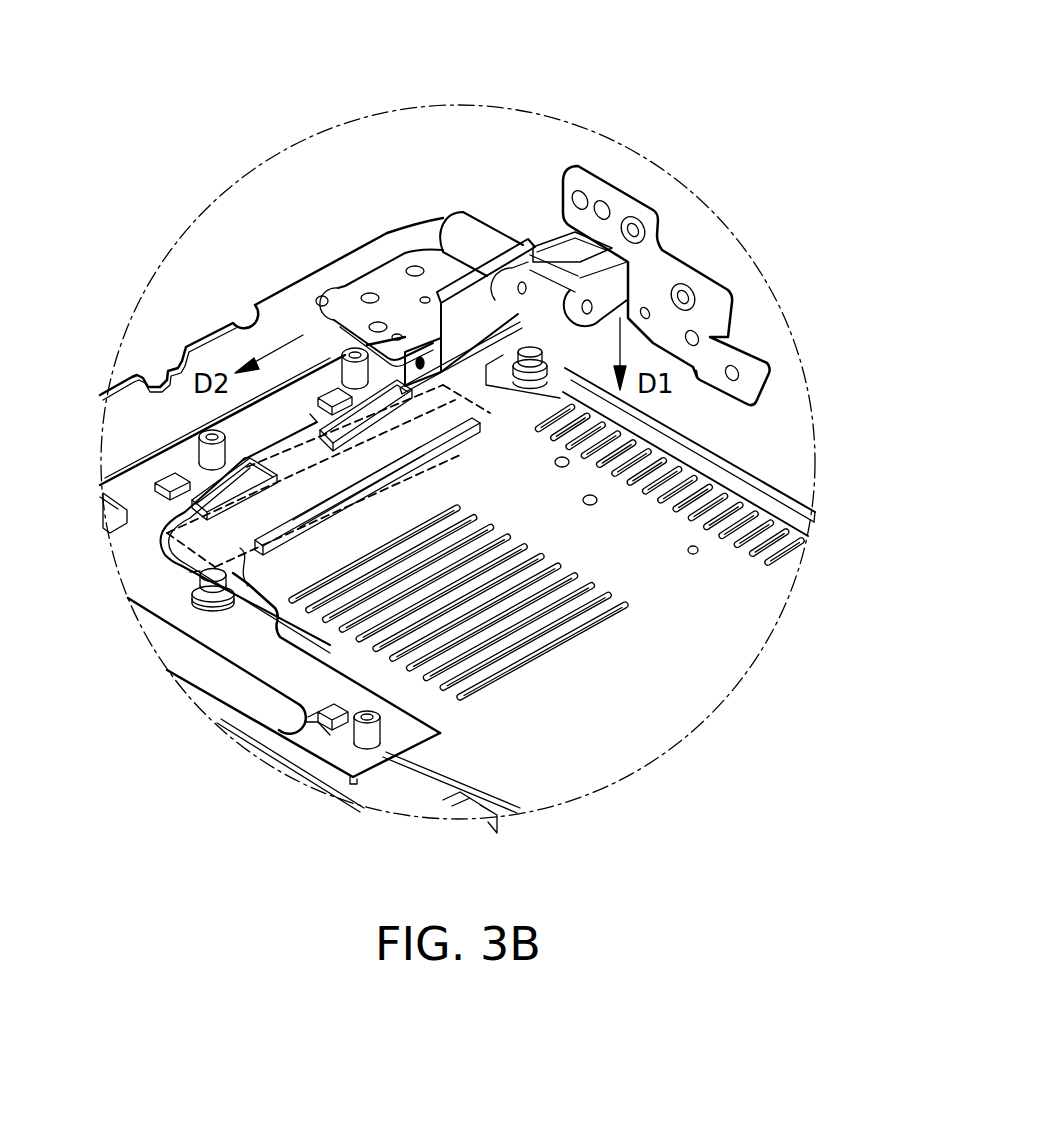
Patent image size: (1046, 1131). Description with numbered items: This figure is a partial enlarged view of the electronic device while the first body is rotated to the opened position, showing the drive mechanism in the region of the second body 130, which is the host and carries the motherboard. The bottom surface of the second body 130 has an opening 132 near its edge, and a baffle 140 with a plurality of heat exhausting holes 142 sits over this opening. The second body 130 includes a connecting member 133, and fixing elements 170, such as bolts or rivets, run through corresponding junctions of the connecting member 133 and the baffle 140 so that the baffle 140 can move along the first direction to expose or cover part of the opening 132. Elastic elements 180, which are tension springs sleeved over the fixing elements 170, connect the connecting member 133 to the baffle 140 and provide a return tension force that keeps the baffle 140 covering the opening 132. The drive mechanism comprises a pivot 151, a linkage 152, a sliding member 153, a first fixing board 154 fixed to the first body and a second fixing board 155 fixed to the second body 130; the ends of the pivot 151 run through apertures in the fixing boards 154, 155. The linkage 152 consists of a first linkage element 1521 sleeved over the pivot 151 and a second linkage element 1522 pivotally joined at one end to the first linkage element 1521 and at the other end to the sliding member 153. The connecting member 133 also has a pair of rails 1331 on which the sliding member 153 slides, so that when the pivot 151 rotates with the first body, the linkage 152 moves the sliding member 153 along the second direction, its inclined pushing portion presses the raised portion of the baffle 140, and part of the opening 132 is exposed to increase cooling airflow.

The second body 130 is at (117, 413).
The opening 132 is at (775, 462).
The connecting member 133 is at (130, 483).
The rails 1331 is at (452, 466).
The baffle 140 is at (720, 683).
The heat exhausting holes 142 is at (500, 683).
The pivot 151 is at (463, 227).
The linkage 152 is at (630, 58).
The first linkage element 1521 is at (548, 262).
The second linkage element 1522 is at (575, 285).
The sliding member 153 is at (157, 530).
The first fixing board 154 is at (710, 297).
The second fixing board 155 is at (383, 283).
The fixing elements 170 is at (200, 575).
The elastic elements 180 is at (200, 605).